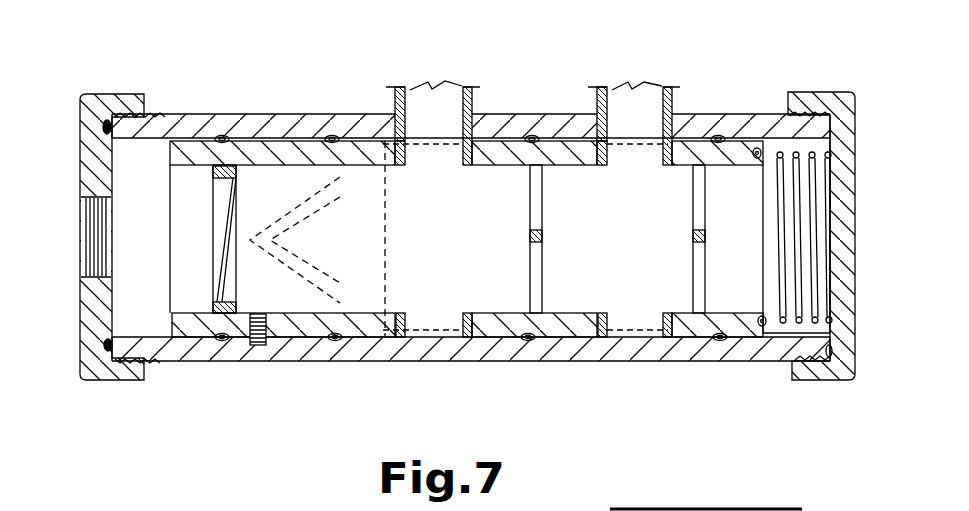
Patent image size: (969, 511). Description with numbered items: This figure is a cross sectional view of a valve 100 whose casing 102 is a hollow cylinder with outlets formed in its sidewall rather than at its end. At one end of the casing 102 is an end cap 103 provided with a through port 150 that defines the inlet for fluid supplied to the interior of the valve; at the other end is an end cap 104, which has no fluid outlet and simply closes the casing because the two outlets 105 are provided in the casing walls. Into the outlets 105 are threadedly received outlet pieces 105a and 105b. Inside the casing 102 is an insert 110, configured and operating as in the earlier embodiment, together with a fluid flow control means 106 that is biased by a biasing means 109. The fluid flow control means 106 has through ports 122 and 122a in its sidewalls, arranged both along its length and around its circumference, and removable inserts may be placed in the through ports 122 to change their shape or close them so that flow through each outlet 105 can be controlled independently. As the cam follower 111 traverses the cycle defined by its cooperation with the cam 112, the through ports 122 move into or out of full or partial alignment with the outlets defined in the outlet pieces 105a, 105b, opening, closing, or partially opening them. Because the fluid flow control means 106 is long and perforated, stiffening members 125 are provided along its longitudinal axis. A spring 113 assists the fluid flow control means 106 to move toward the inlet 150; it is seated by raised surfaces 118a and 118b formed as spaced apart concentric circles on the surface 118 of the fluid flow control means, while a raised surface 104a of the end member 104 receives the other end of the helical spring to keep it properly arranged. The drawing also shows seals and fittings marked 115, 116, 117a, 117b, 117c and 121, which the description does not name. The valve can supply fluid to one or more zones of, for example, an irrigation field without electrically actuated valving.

The valve 100 is at (436, 362).
The valve casing 102 is at (655, 350).
The end cap 103 is at (135, 93).
The end cap 104 is at (832, 94).
The raised surface 104a is at (828, 188).
The outlets 105 is at (626, 117).
The outlet piece 105a is at (396, 105).
The outlet piece 105b is at (596, 93).
The fluid flow control means 106 is at (290, 328).
The biasing means 109 is at (233, 183).
The insert 110 is at (181, 343).
The cam follower 111 is at (260, 346).
The cam 112 is at (302, 228).
The spring 113 is at (810, 236).
The end seal 115 is at (153, 364).
The O-ring seal 116 is at (104, 126).
The O-ring 117a is at (338, 341).
The O-ring 117b is at (532, 341).
The O-ring 117c is at (725, 341).
The surface 118 is at (754, 157).
The raised surface 118a is at (786, 354).
The raised surface 118b is at (762, 314).
The O-ring 121 is at (224, 341).
The through port 122 is at (407, 165).
The through port 122a is at (599, 165).
The stiffening members 125 is at (530, 200).
The through port 150 is at (85, 212).